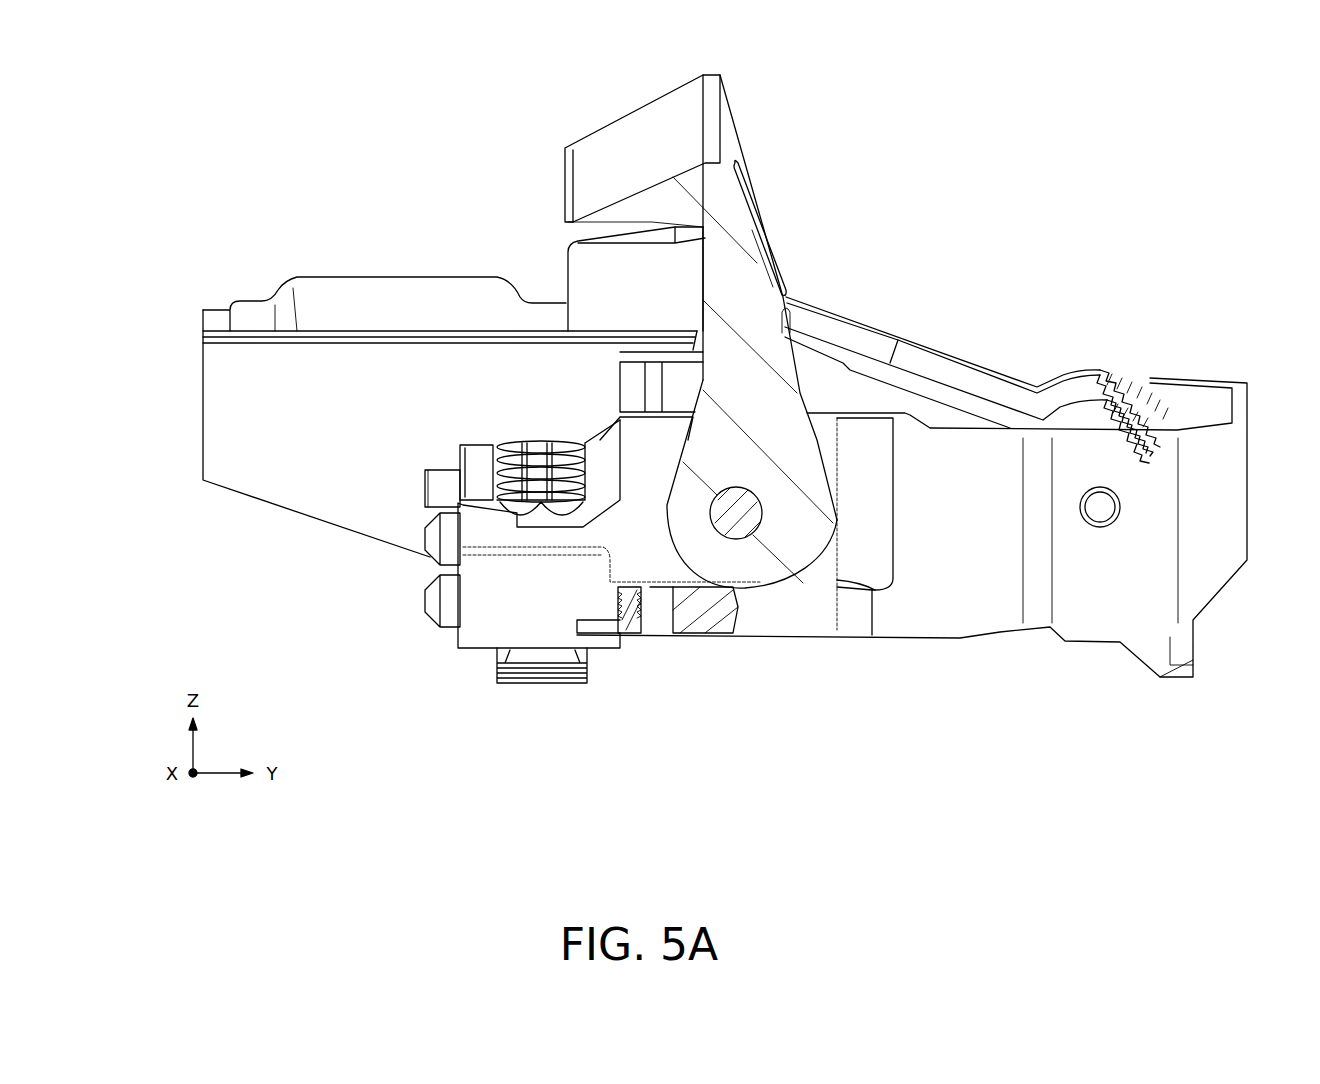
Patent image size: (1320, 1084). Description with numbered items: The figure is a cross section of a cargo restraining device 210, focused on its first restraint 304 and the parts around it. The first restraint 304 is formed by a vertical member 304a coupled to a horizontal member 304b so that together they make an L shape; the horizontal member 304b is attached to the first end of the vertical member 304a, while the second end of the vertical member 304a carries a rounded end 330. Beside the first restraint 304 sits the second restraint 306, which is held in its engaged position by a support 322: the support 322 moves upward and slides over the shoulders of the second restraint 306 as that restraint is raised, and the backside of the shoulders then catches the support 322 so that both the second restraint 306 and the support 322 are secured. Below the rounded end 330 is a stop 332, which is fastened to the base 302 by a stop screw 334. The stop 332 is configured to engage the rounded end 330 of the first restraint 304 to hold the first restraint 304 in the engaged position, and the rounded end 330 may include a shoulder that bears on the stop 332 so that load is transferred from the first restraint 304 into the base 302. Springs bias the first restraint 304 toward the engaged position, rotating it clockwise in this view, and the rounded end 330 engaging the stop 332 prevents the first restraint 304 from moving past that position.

The cargo restraining device 210 is at (203, 125).
The base 302 is at (1003, 664).
The first restraint 304 is at (700, 112).
The vertical member 304a is at (752, 328).
The horizontal member 304b is at (578, 213).
The second restraint 306 is at (578, 278).
The support 322 is at (918, 355).
The rounded end 330 is at (787, 593).
The stop 332 is at (705, 625).
The stop screw 334 is at (628, 622).